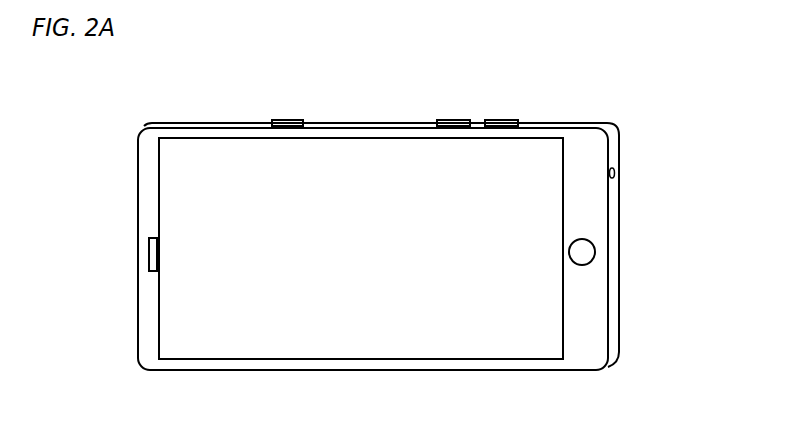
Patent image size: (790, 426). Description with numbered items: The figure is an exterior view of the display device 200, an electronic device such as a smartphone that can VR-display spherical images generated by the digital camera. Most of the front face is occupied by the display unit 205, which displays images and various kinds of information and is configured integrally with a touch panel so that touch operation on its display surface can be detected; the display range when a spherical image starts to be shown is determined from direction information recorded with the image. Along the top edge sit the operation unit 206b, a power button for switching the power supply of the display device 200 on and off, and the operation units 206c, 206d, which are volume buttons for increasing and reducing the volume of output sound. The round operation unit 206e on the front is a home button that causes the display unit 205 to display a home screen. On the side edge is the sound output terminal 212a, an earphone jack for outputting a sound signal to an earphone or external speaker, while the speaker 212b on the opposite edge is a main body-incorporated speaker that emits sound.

The display device 200 is at (584, 328).
The display unit 205 is at (221, 152).
The operation unit 206b is at (281, 120).
The operation unit 206c is at (448, 120).
The operation unit 206d is at (505, 120).
The operation unit 206e is at (584, 251).
The sound output terminal 212a is at (618, 172).
The speaker 212b is at (150, 250).